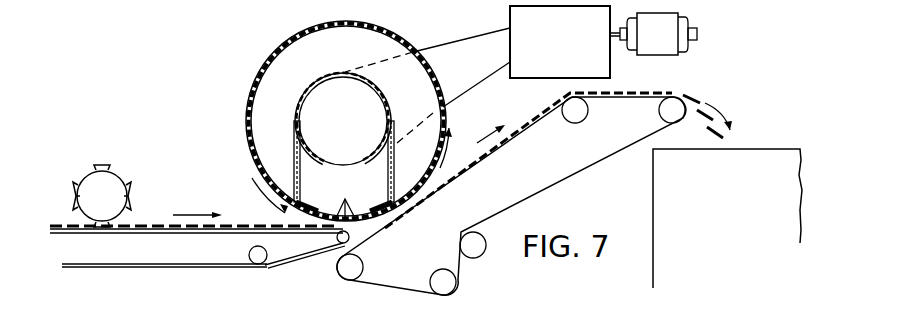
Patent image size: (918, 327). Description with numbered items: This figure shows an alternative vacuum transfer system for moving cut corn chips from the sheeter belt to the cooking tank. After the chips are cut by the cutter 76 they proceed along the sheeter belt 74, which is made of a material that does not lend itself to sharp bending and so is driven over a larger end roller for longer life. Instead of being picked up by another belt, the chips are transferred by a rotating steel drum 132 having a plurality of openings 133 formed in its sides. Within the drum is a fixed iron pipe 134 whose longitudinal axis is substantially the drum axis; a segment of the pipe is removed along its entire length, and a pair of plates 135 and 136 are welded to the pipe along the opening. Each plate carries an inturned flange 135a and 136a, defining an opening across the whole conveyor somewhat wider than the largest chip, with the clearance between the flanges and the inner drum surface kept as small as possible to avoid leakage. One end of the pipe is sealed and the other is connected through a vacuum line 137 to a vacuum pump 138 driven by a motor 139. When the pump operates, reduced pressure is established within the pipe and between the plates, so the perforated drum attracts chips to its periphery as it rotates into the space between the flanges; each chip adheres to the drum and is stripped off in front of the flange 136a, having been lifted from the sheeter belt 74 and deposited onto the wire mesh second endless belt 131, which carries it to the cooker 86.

The sheeter belt 74 is at (150, 234).
The cutter 76 is at (128, 183).
The cooker 86 is at (735, 222).
The second endless belt 131 is at (480, 157).
The rotating steel drum 132 is at (267, 60).
The openings 133 is at (346, 206).
The fixed iron pipe 134 is at (300, 100).
The plate 135 is at (292, 172).
The inturned flange 135a is at (306, 203).
The plate 136 is at (394, 174).
The inturned flange 136a is at (378, 189).
The vacuum line 137 is at (474, 37).
The vacuum pump 138 is at (573, 71).
The motor 139 is at (688, 45).